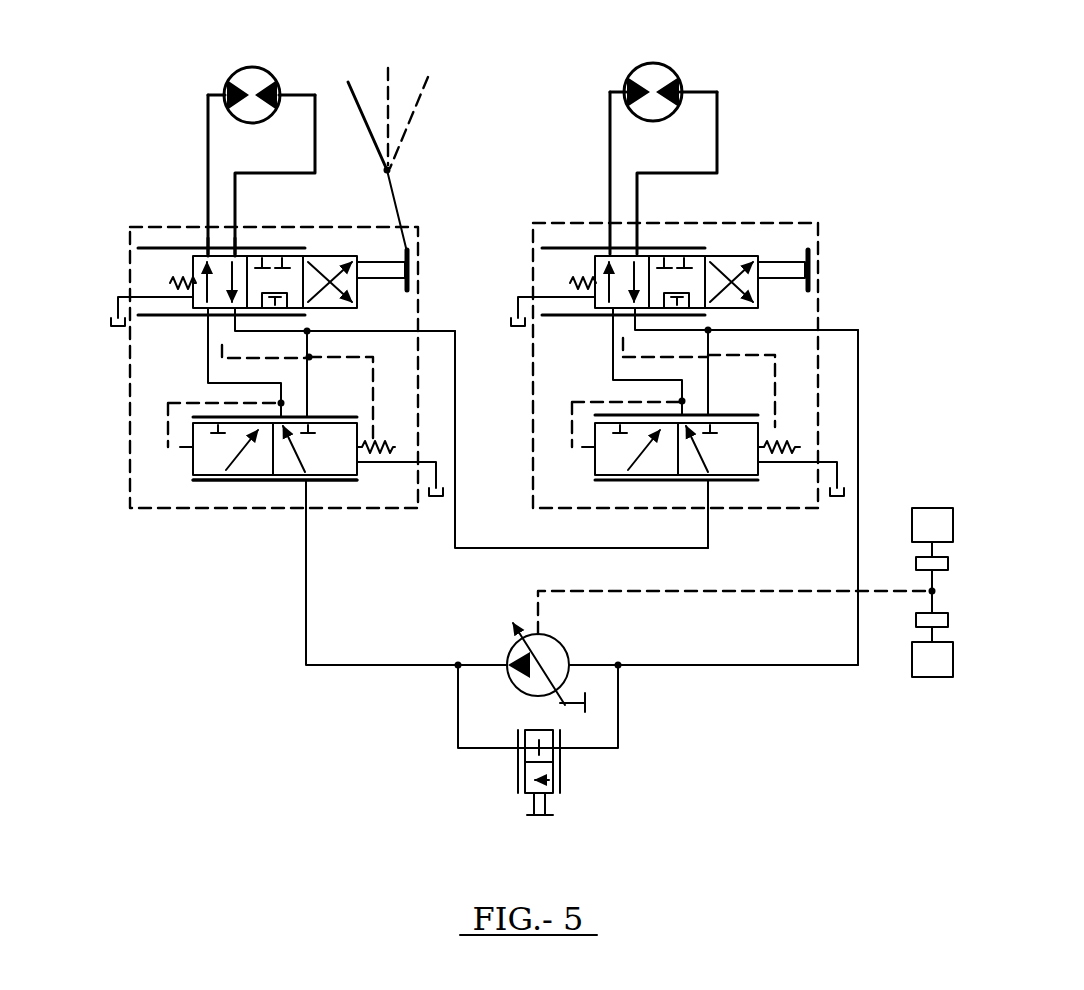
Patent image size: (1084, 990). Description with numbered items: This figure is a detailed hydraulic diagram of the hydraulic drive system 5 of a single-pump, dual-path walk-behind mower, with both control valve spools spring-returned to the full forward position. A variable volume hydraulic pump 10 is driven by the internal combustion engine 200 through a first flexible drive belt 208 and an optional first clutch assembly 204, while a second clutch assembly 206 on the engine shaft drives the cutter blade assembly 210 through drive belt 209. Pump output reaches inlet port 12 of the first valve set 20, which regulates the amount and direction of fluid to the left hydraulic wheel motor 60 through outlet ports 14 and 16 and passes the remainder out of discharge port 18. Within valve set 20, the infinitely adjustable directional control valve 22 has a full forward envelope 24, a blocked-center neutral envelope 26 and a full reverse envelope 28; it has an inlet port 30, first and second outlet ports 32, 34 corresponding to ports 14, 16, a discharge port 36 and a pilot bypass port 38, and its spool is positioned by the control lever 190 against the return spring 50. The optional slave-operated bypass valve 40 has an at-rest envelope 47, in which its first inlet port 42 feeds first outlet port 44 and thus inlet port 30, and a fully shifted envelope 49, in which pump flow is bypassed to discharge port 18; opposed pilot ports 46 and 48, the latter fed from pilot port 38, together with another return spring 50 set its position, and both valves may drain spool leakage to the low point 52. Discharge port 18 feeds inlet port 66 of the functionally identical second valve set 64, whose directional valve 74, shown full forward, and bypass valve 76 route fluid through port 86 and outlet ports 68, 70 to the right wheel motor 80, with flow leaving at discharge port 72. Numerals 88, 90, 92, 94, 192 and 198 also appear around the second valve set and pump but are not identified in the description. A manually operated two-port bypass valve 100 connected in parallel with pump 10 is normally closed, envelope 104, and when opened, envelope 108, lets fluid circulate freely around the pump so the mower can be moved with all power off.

The hydraulic drive system 5 is at (853, 104).
The variable volume hydraulic pump 10 is at (564, 650).
The inlet port 12 is at (304, 487).
The outlet port 14 is at (205, 190).
The outlet port 16 is at (237, 196).
The discharge port 18 is at (440, 331).
The first valve set 20 is at (130, 488).
The volume control valve 22 is at (352, 246).
The full forward position envelope 24 is at (168, 248).
The neutral position envelope 26 is at (393, 98).
The full reverse position envelope 28 is at (417, 105).
The inlet port 30 is at (212, 358).
The first outlet port 32 is at (205, 236).
The second outlet port 34 is at (237, 232).
The discharge port 36 is at (270, 338).
The bypass port 38 is at (218, 338).
The slave-operated bypass valve 40 is at (197, 484).
The first inlet port 42 is at (317, 483).
The first outlet port 44 is at (286, 410).
The first pilot inlet port 46 is at (165, 405).
The at-rest position envelope 47 is at (255, 460).
The second pilot inlet port 48 is at (375, 402).
The fully shifted position envelope 49 is at (357, 478).
The return spring 50 is at (170, 283).
The drain line low point 52 is at (118, 330).
The hydraulic wheel motor 60 is at (246, 77).
The second valve set 64 is at (532, 489).
The inlet port 66 is at (710, 526).
The outlet port 68 is at (608, 203).
The outlet port 70 is at (639, 196).
The discharge port 72 is at (846, 328).
The directional valve 74 is at (703, 244).
The bypass valve 76 is at (742, 483).
The hydraulic wheel motor 80 is at (673, 74).
The port 86 is at (610, 348).
The conduit 88 is at (624, 340).
The conduit 90 is at (637, 327).
The pilot line 92 is at (777, 388).
The pilot line 94 is at (613, 400).
The bypass valve 100 is at (582, 785).
The closed position envelope 104 is at (527, 730).
The open position envelope 108 is at (533, 798).
The control lever 190 is at (382, 264).
The valve actuator 192 is at (782, 264).
The displacement control 198 is at (588, 704).
The internal combustion engine 200 is at (925, 518).
The first clutch assembly 204 is at (915, 565).
The second clutch assembly 206 is at (915, 628).
The first flexible drive belt 208 is at (765, 590).
The drive belt 209 is at (930, 635).
The cutter blade assembly 210 is at (942, 678).